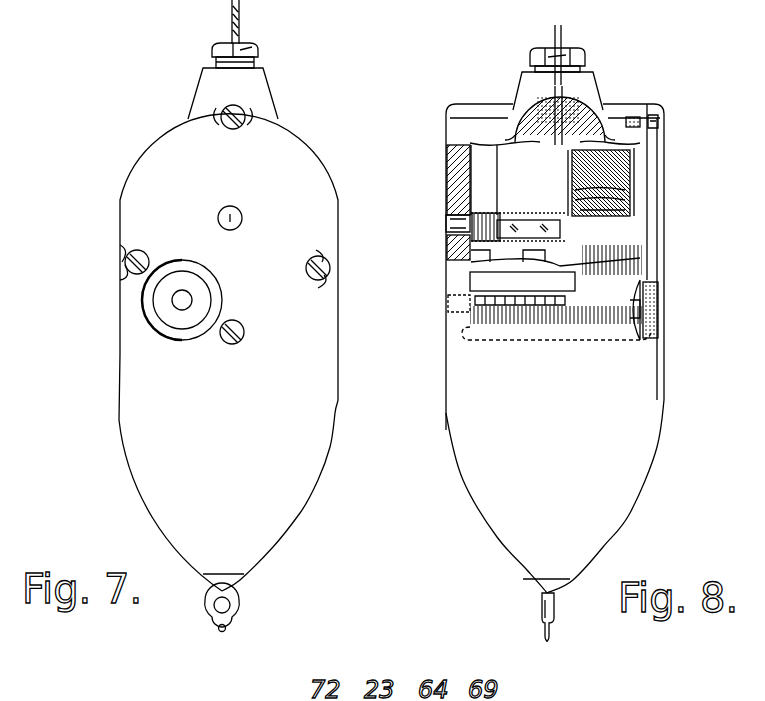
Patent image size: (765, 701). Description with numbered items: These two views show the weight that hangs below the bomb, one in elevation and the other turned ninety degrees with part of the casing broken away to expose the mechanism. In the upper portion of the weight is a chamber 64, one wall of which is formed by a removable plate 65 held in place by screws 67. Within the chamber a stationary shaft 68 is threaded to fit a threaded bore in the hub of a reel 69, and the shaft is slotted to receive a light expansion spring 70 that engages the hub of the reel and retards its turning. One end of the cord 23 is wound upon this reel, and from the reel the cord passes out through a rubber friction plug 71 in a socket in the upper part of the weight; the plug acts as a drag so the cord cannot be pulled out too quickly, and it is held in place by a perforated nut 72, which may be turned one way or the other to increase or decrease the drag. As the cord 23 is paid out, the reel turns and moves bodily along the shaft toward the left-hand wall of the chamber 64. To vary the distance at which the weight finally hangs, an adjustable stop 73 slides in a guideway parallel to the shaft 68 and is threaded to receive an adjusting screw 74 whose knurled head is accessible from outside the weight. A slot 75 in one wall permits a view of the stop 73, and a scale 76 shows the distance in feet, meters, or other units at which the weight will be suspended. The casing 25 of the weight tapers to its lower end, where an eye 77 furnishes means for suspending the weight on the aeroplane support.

In FIG. 7, the cord 23 is at (240, 14).
In FIG. 8, the cord 23 is at (562, 36).
In FIG. 7, the perforated nut 72 is at (252, 47).
In FIG. 8, the perforated nut 72 is at (583, 57).
In FIG. 8, the rubber friction plug 71 is at (588, 100).
In FIG. 7, the screws 67 is at (244, 110).
In FIG. 8, the screws 67 is at (660, 125).
In FIG. 7, the removable plate 65 is at (290, 166).
In FIG. 8, the removable plate 65 is at (660, 170).
In FIG. 8, the chamber 64 is at (470, 140).
In FIG. 7, the stationary shaft 68 is at (229, 207).
In FIG. 8, the stationary shaft 68 is at (444, 222).
In FIG. 8, the reel 69 is at (632, 182).
In FIG. 8, the light expansion spring 70 is at (497, 215).
In FIG. 8, the adjustable stop 73 is at (536, 235).
In FIG. 7, the adjusting screw 74 is at (178, 300).
In FIG. 8, the adjusting screw 74 is at (690, 300).
In FIG. 8, the slot 75 is at (470, 266).
In FIG. 8, the scale 76 is at (470, 285).
In FIG. 7, the lower shell 25 is at (255, 468).
In FIG. 8, the lower shell 25 is at (510, 437).
In FIG. 7, the eye 77 is at (240, 606).
In FIG. 8, the eye 77 is at (540, 606).